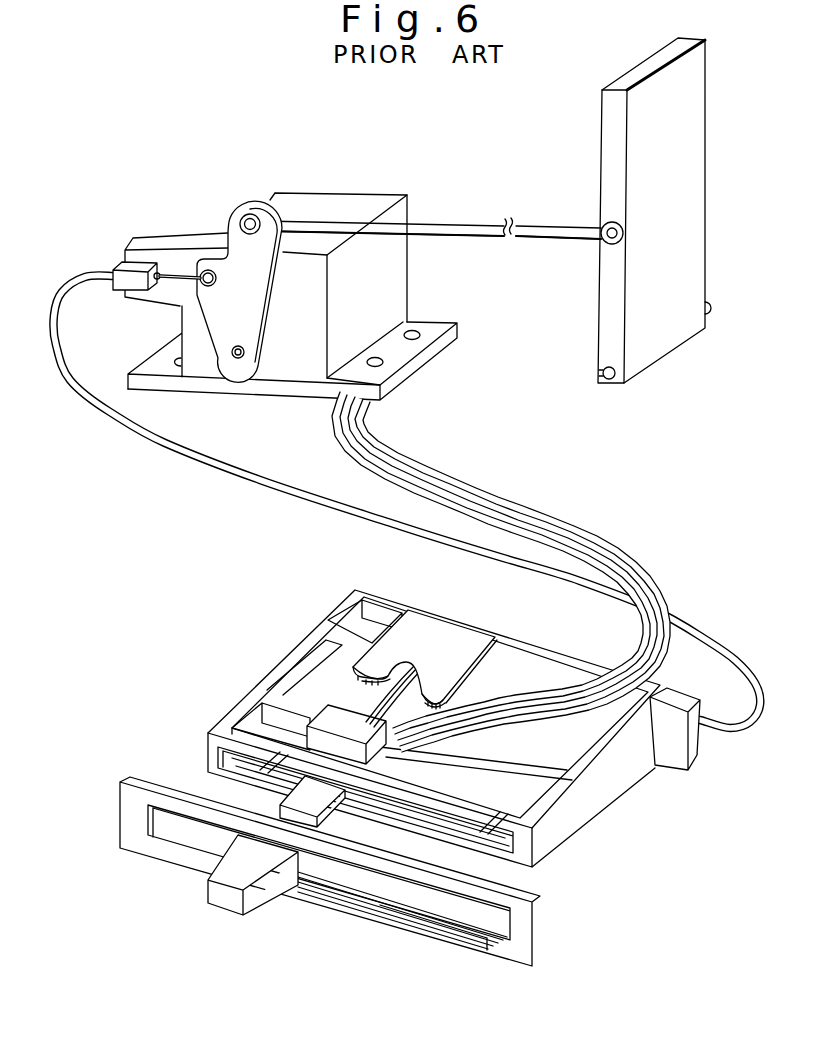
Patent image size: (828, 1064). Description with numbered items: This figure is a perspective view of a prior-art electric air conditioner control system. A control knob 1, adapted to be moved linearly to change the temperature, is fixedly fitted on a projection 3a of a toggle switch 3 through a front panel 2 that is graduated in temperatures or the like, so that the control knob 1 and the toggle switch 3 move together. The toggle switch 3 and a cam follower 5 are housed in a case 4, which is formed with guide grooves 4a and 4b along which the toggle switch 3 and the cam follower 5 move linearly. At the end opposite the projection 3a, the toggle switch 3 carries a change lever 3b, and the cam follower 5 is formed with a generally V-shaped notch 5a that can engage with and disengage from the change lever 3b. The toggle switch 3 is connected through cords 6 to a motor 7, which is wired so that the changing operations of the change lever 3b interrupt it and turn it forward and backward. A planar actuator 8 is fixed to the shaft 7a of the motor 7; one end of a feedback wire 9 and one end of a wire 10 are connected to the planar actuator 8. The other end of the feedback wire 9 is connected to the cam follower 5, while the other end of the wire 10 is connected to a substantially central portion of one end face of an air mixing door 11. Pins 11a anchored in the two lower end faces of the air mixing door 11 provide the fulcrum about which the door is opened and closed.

The control knob 1 is at (220, 893).
The front panel 2 is at (522, 920).
The toggle switch 3 is at (309, 713).
The projection 3a is at (321, 818).
The change lever 3b is at (377, 700).
The case 4 is at (620, 783).
The guide groove 4a is at (518, 802).
The guide groove 4b is at (363, 637).
The cam follower 5 is at (445, 616).
The V-shaped notch 5a is at (418, 668).
The cords 6 is at (568, 528).
The motor 7 is at (409, 296).
The shaft 7a is at (237, 358).
The planar actuator 8 is at (243, 253).
The feedback wire 9 is at (170, 443).
The wire 10 is at (447, 224).
The air mixing door 11 is at (703, 128).
The pins 11a is at (707, 307).